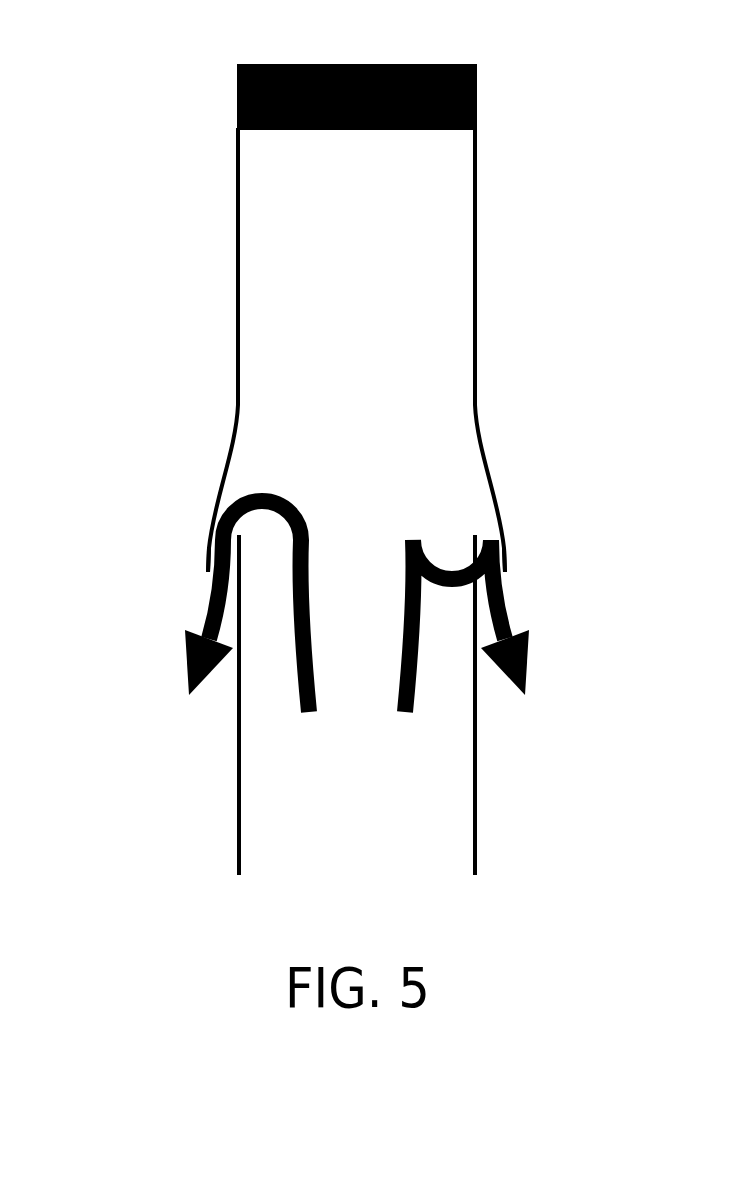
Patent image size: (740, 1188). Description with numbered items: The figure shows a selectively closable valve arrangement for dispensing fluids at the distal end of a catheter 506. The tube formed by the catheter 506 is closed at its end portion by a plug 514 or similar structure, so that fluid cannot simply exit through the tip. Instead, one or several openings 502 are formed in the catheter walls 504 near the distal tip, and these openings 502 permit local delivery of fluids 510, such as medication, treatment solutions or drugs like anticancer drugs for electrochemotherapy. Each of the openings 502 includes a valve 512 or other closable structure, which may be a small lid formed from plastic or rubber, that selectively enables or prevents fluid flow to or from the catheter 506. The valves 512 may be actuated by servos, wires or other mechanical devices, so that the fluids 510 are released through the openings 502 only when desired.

The catheter 506 is at (157, 143).
The plug 514 is at (350, 130).
The openings 502 is at (233, 490).
The valve 512 is at (210, 537).
The catheter walls 504 is at (473, 820).
The fluids 510 is at (398, 712).